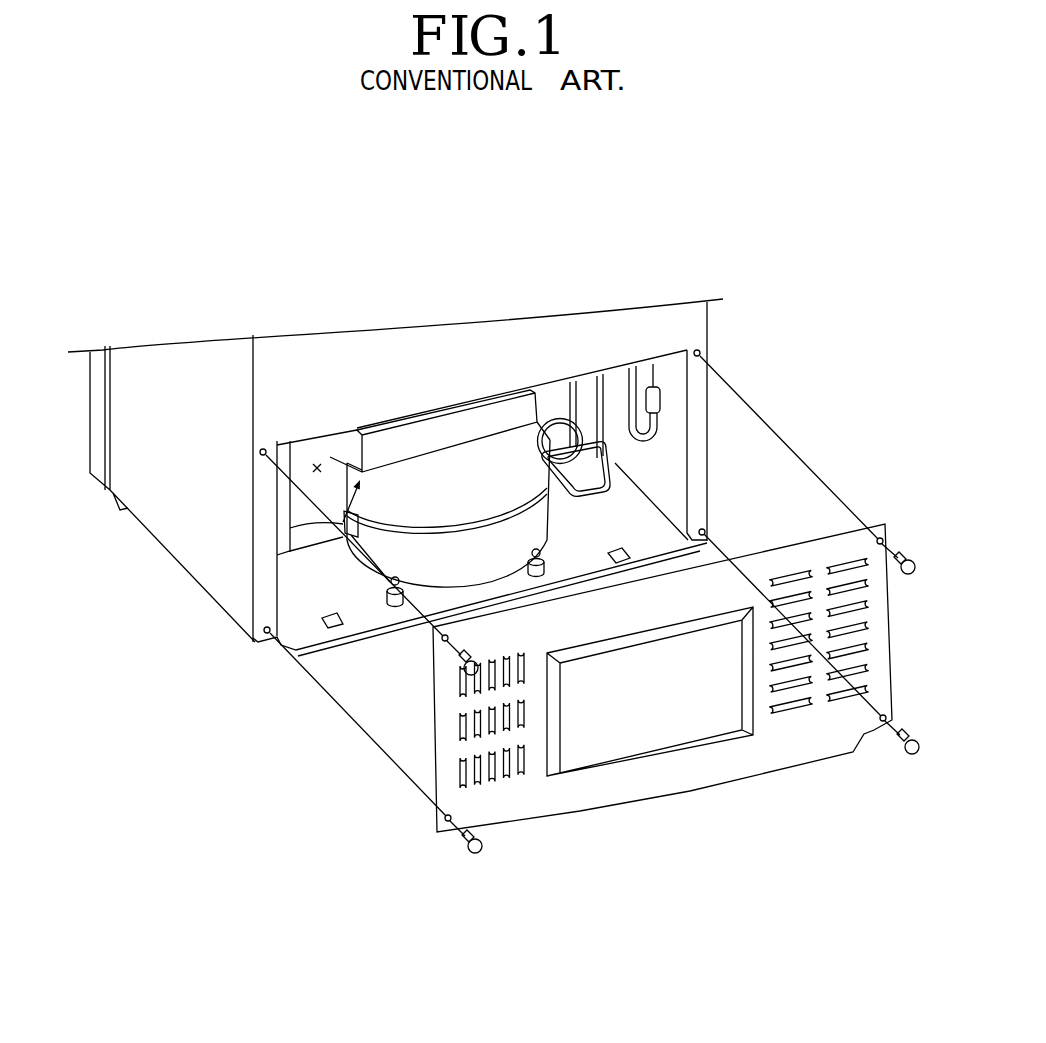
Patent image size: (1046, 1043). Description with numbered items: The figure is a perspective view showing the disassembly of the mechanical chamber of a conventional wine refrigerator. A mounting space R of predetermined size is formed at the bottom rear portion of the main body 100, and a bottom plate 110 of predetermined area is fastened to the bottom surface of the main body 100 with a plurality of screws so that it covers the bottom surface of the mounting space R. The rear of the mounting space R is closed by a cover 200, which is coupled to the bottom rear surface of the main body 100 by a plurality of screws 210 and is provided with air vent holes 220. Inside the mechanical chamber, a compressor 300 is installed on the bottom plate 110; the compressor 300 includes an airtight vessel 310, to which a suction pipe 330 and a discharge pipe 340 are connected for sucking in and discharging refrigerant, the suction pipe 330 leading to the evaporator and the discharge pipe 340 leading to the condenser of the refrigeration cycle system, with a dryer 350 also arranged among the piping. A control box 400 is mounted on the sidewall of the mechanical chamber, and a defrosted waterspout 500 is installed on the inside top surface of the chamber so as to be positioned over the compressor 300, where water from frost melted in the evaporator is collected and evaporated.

The main body 100 is at (157, 557).
The bottom plate 110 is at (327, 655).
The cover 200 is at (691, 798).
The screws 210 is at (915, 758).
The air vent holes 220 is at (790, 716).
The compressor 300 is at (561, 517).
The airtight vessel 310 is at (497, 468).
The suction pipe 330 is at (575, 422).
The discharge pipe 340 is at (555, 422).
The dryer 350 is at (657, 386).
The control box 400 is at (343, 537).
The defrosted waterspout 500 is at (287, 570).
The mounting space R is at (317, 462).